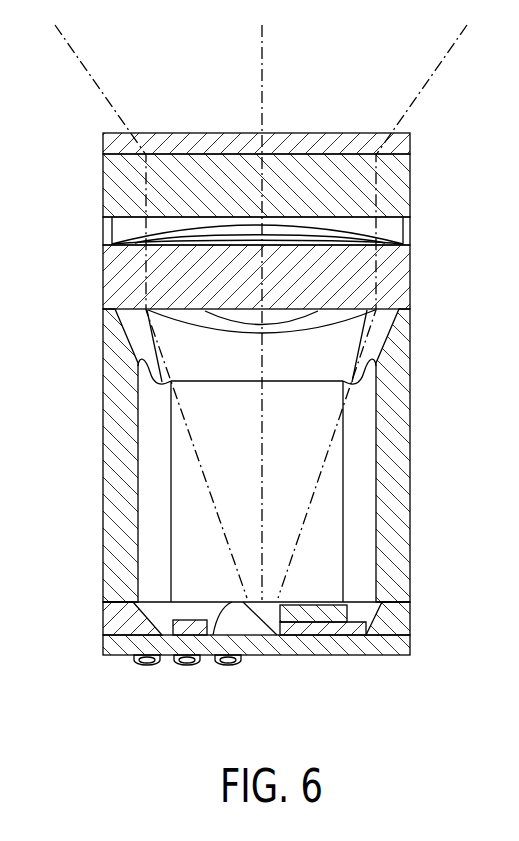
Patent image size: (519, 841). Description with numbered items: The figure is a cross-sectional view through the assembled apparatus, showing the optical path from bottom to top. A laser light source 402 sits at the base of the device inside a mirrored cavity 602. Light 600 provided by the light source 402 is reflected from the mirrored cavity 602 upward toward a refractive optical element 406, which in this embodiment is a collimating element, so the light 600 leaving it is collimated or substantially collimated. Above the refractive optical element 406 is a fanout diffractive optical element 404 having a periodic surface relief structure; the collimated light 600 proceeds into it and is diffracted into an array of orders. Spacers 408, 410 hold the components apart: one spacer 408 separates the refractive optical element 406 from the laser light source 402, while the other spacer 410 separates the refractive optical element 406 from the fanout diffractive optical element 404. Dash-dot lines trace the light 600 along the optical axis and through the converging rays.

The light 600 is at (89, 68).
The fanout diffractive optical element 404 is at (115, 188).
The spacer 410 is at (407, 232).
The refractive optical element 406 is at (402, 278).
The spacer 408 is at (402, 515).
The laser light source 402 is at (323, 627).
The mirrored cavity 602 is at (277, 635).